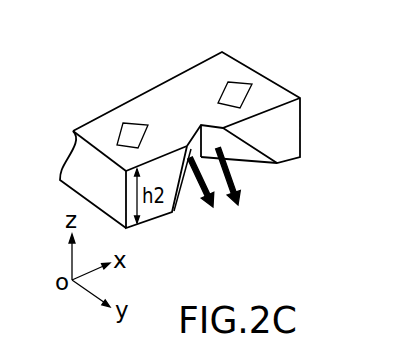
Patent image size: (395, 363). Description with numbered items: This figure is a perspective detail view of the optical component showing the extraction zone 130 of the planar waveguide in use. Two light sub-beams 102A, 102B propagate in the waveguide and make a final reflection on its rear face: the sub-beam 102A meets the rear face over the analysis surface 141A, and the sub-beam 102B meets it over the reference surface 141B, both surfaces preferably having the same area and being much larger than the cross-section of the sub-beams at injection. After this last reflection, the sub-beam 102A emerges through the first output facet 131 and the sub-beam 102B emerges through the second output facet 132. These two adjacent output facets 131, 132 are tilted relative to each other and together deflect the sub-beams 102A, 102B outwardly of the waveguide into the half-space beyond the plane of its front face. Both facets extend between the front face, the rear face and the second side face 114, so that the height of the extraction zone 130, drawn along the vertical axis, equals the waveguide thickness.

The second side face 114 is at (295, 129).
The extraction zone 130 is at (197, 121).
The first output facet 131 is at (252, 155).
The second output facet 132 is at (193, 168).
The analysis surface 141A is at (238, 89).
The reference surface 141B is at (133, 128).
The sub-beam 102A is at (236, 180).
The sub-beam 102B is at (222, 208).